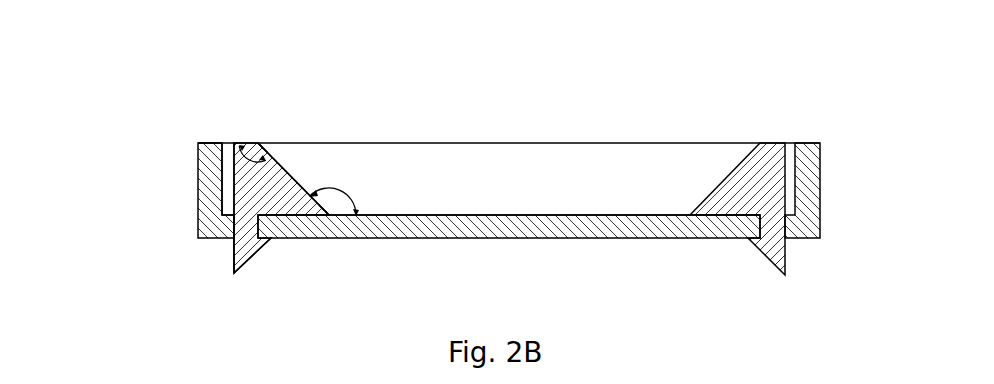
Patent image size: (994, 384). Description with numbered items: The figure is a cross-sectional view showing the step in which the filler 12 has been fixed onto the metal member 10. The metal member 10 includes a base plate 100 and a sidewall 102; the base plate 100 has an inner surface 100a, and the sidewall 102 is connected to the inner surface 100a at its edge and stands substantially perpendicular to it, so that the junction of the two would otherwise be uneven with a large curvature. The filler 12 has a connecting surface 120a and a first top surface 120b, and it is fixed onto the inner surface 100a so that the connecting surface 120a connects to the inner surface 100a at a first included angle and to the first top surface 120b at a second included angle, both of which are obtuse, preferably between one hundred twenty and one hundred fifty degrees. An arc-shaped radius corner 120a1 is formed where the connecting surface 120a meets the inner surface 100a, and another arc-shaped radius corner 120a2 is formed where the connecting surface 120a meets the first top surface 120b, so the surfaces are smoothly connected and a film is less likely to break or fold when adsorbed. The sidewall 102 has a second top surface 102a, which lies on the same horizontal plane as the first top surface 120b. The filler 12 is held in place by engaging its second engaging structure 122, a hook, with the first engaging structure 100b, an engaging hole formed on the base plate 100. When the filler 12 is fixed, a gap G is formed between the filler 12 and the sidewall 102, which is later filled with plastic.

The metal member 10 is at (98, 188).
The filler 12 is at (265, 184).
The base plate 100 is at (423, 240).
The inner surface 100a is at (510, 214).
The first engaging structure 100b is at (226, 233).
The sidewall 102 is at (198, 210).
The second top surface 102a is at (212, 143).
The connecting surface 120a is at (313, 188).
The arc-shaped radius corner 120a1 is at (326, 220).
The arc-shaped radius corner 120a2 is at (262, 145).
The first top surface 120b is at (248, 145).
The second engaging structure 122 is at (253, 250).
The gap G is at (231, 135).